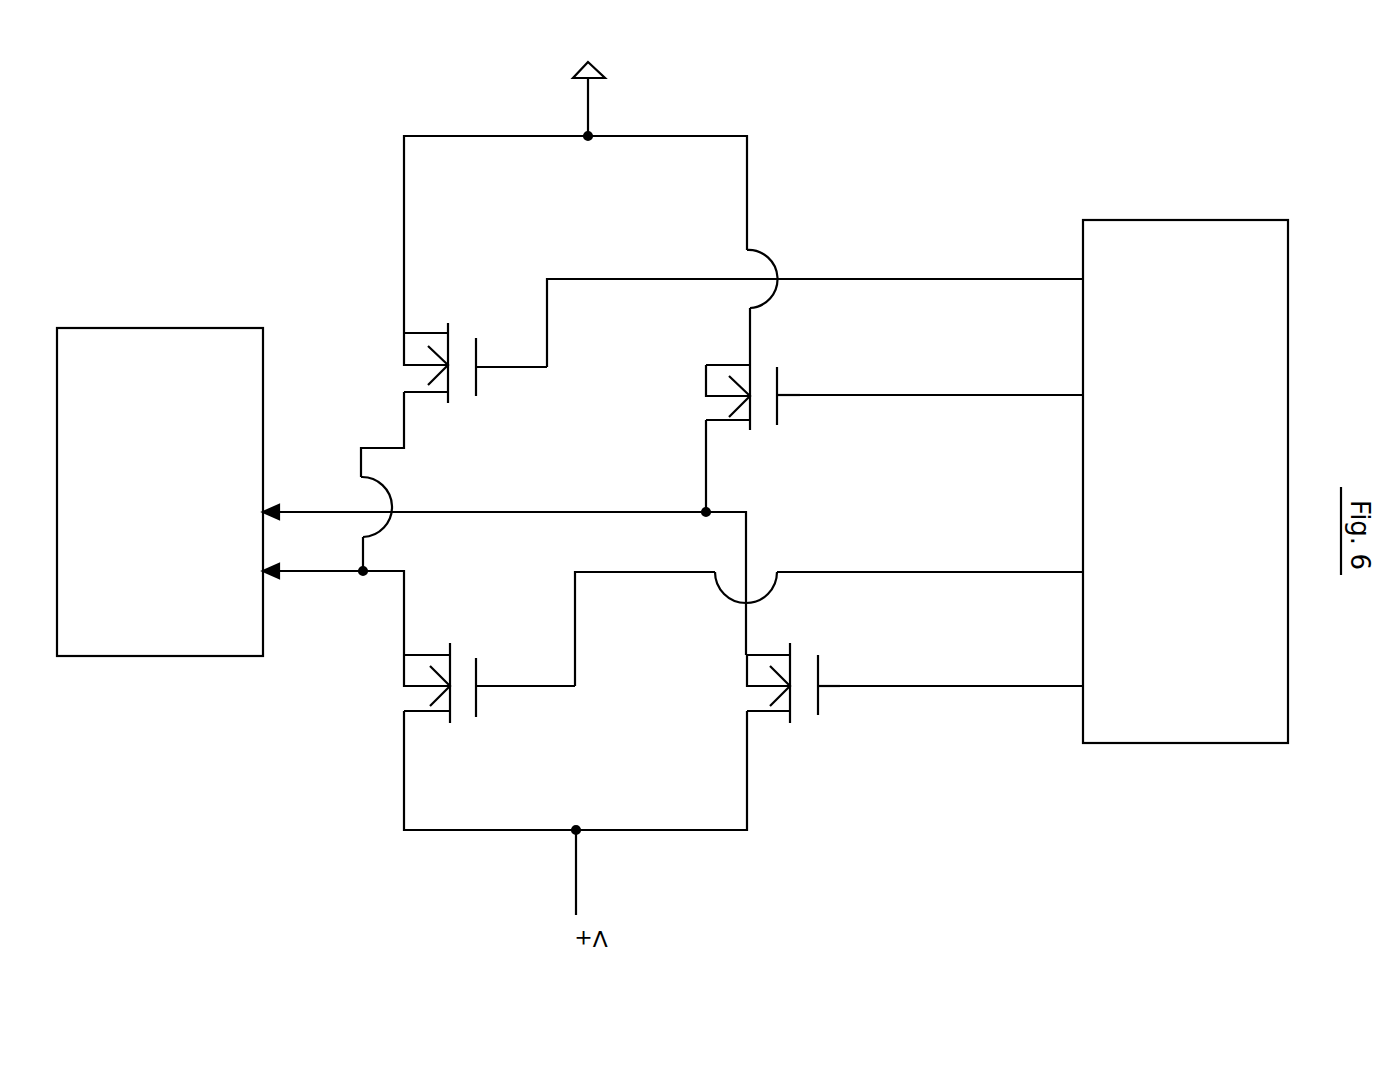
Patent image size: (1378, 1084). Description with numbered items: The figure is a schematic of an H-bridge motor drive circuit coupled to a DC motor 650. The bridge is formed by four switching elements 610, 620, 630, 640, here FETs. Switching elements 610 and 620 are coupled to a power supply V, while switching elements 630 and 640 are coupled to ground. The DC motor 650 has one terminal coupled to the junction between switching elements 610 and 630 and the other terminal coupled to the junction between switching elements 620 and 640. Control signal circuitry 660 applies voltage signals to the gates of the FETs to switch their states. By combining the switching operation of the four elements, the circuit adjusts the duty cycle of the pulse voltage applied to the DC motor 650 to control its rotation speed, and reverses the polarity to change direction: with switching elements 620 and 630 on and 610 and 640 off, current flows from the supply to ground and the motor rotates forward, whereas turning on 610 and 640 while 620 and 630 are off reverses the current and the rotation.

The switching element 610 is at (760, 712).
The switching element 620 is at (407, 713).
The switching element 630 is at (717, 422).
The switching element 640 is at (420, 327).
The DC motor 650 is at (154, 327).
The control signal circuitry 660 is at (1180, 220).